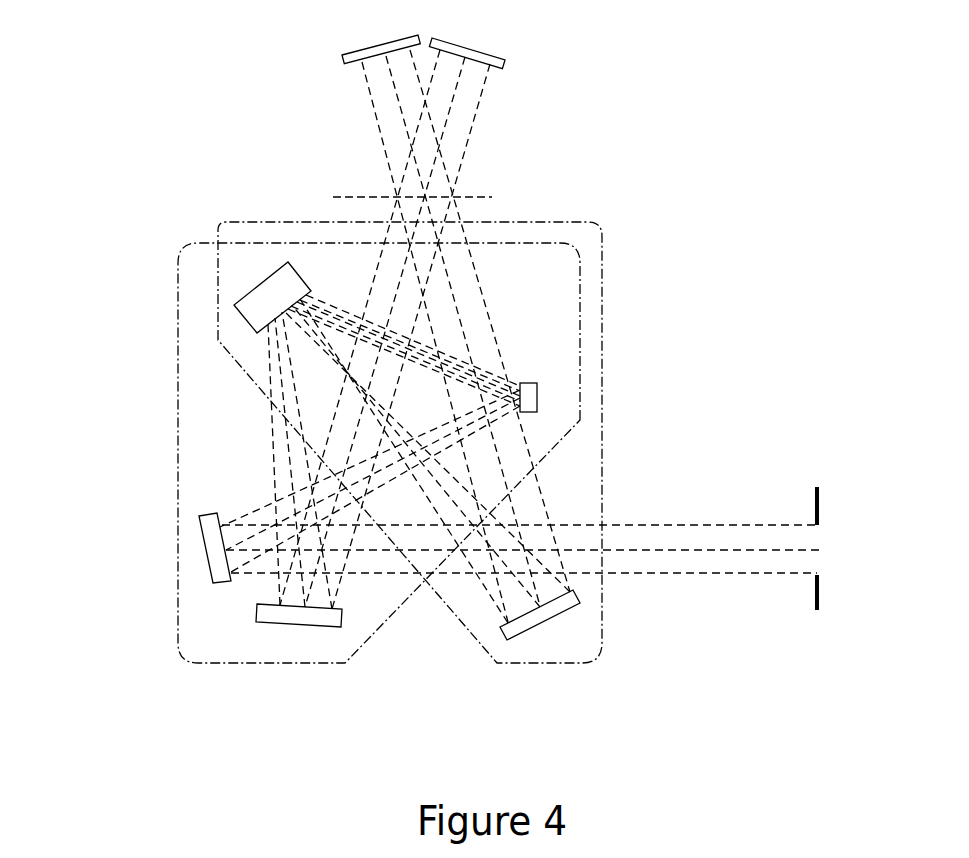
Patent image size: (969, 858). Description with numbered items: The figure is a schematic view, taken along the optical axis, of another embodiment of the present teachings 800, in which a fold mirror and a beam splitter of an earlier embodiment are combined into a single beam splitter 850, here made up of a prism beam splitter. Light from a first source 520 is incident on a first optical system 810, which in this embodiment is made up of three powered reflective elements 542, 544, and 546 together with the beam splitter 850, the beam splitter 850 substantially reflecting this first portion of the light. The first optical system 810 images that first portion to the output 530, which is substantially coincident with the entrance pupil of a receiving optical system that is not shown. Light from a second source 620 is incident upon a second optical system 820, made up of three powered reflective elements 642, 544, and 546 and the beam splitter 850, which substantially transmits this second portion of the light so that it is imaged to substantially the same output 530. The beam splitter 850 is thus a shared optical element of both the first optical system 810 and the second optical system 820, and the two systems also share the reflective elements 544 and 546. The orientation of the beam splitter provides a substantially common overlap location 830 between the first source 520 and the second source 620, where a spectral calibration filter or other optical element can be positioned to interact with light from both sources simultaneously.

The embodiment of the present teachings 800 is at (137, 102).
The first source 520 is at (342, 57).
The second source 620 is at (505, 62).
The common overlap location 830 is at (492, 197).
The second optical system 820 is at (190, 246).
The first optical system 810 is at (602, 290).
The beam splitter 850 is at (235, 306).
The powered reflective element 544 is at (537, 397).
The powered reflective element 546 is at (205, 553).
The powered reflective element 642 is at (298, 626).
The powered reflective element 542 is at (543, 632).
The output 530 is at (817, 612).